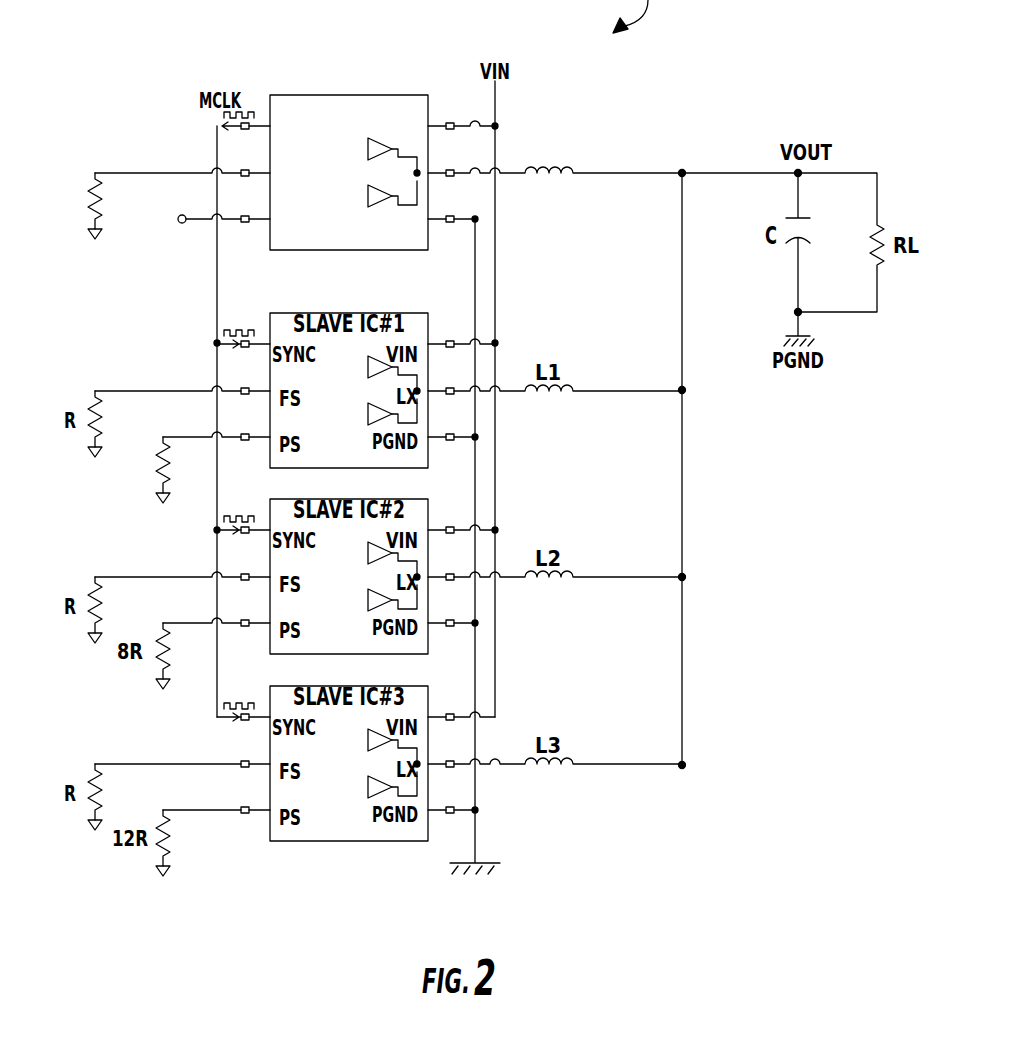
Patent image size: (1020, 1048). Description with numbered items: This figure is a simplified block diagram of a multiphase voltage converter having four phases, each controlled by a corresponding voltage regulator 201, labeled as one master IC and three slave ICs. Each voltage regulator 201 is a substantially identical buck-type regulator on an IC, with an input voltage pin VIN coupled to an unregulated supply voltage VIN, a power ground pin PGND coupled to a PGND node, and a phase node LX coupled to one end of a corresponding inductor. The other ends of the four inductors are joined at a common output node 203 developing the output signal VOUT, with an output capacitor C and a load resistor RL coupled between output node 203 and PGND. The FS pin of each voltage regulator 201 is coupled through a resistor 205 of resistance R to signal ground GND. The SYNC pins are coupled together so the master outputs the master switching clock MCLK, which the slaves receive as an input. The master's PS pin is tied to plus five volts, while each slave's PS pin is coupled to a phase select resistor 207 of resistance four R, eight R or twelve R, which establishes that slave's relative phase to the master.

The voltage regulator 201 is at (353, 42).
The common output node 203 is at (682, 172).
The resistor 205 is at (95, 130).
The phase select resistor 207 is at (160, 410).